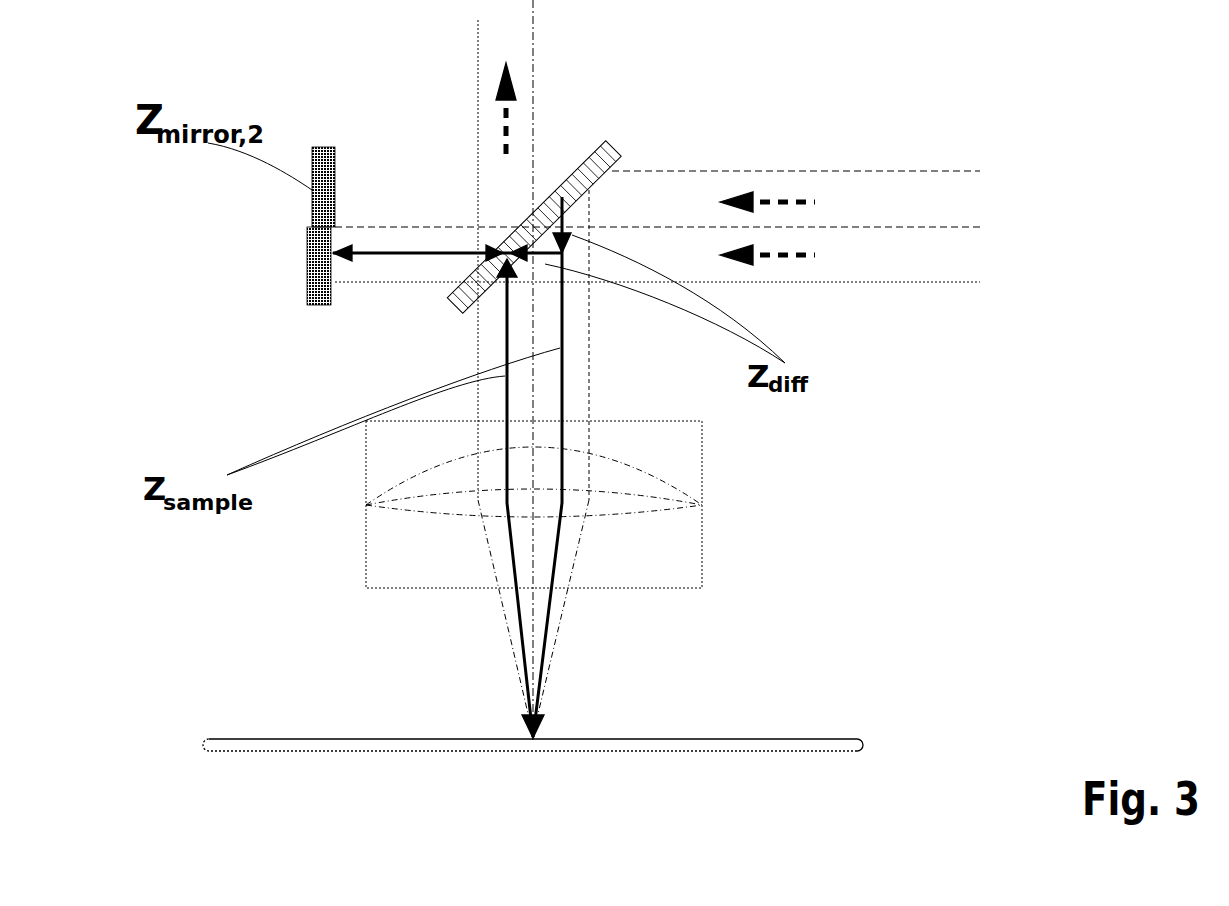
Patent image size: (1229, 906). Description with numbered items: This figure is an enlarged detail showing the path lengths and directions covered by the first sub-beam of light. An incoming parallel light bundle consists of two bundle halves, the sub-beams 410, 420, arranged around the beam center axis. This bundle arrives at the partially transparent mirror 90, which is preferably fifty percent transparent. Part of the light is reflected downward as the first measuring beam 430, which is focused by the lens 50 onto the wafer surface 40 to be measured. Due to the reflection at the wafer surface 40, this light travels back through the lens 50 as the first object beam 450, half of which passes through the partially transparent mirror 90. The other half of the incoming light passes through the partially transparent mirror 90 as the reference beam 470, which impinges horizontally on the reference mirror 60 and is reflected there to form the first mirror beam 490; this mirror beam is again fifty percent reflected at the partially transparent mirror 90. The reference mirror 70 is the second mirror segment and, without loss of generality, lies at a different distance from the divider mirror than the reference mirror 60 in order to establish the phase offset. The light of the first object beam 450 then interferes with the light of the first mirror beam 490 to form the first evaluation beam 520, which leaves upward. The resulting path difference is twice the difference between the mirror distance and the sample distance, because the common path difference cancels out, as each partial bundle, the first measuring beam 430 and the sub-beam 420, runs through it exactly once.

The wafer surface 40 is at (738, 737).
The lens 50 is at (702, 478).
The reference mirror 60 is at (307, 262).
The reference mirror 70 is at (323, 145).
The partially transparent mirror 90 is at (615, 142).
The sub-beam 410 is at (801, 203).
The sub-beam 420 is at (801, 256).
The first measuring beam 430 is at (569, 467).
The first object beam 450 is at (477, 336).
The reference beam 470 is at (447, 207).
The first mirror beam 490 is at (423, 227).
The first evaluation beam 520 is at (506, 99).